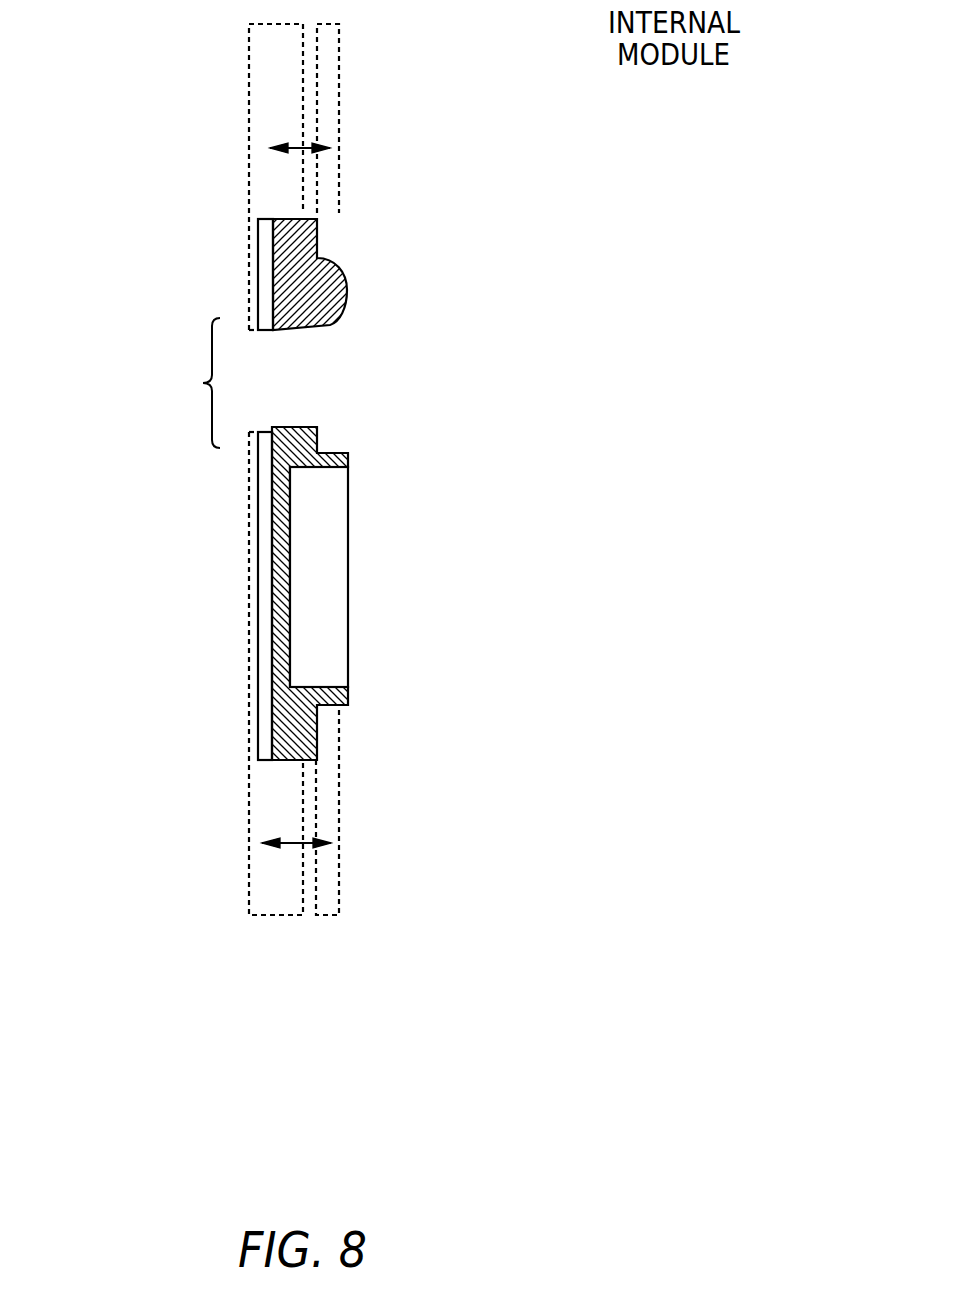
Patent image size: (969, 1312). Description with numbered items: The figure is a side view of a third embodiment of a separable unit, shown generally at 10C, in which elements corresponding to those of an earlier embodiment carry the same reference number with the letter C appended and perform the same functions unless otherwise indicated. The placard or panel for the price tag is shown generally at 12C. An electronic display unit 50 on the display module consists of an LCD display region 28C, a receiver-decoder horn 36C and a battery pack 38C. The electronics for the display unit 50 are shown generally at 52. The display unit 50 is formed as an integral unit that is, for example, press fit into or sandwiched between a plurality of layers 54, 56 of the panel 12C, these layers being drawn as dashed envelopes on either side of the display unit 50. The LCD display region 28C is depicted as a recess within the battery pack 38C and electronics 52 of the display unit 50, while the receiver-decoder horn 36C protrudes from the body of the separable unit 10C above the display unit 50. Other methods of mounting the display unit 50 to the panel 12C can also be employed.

The separable unit 10C is at (430, 139).
The panel 12C is at (322, 732).
The LCD display region 28C is at (348, 551).
The receiver-decoder horn 36C is at (347, 292).
The battery pack 38C is at (268, 740).
The electronic display unit 50 is at (176, 515).
The electronics 52 is at (273, 271).
The layer 54 is at (281, 918).
The layer 56 is at (339, 890).